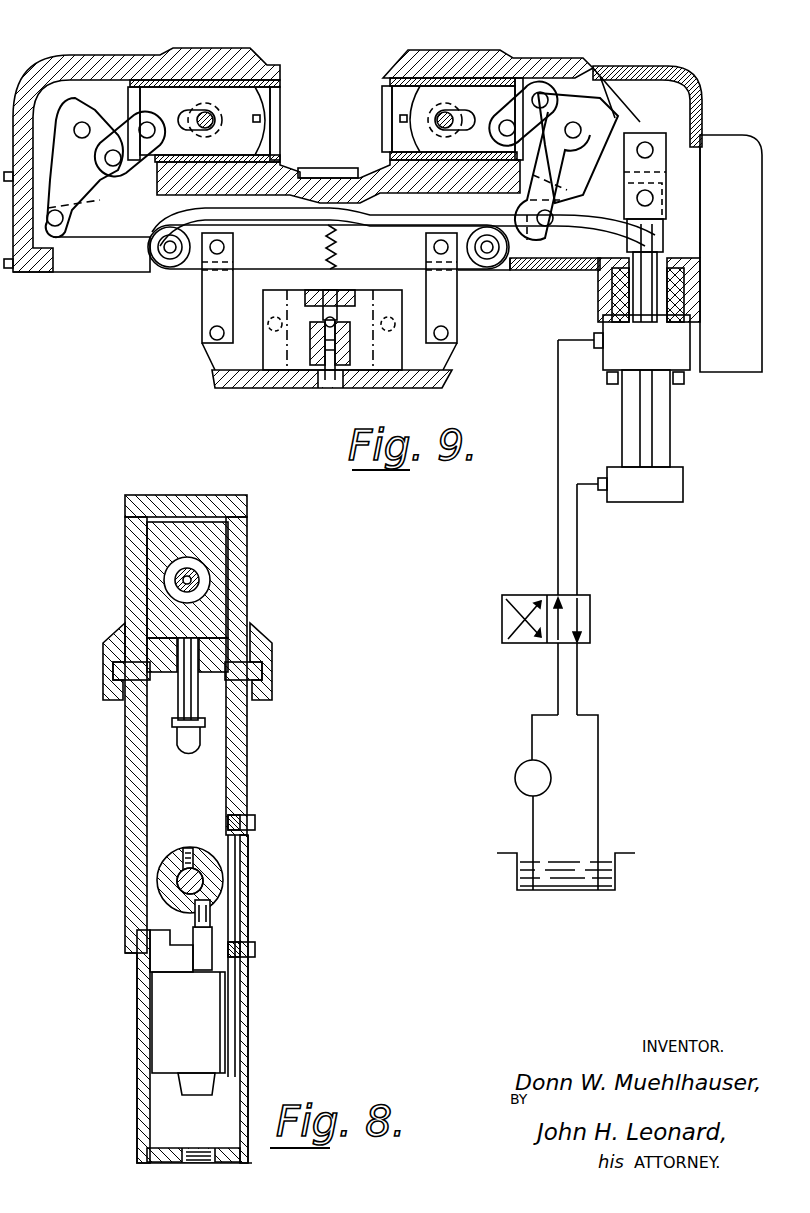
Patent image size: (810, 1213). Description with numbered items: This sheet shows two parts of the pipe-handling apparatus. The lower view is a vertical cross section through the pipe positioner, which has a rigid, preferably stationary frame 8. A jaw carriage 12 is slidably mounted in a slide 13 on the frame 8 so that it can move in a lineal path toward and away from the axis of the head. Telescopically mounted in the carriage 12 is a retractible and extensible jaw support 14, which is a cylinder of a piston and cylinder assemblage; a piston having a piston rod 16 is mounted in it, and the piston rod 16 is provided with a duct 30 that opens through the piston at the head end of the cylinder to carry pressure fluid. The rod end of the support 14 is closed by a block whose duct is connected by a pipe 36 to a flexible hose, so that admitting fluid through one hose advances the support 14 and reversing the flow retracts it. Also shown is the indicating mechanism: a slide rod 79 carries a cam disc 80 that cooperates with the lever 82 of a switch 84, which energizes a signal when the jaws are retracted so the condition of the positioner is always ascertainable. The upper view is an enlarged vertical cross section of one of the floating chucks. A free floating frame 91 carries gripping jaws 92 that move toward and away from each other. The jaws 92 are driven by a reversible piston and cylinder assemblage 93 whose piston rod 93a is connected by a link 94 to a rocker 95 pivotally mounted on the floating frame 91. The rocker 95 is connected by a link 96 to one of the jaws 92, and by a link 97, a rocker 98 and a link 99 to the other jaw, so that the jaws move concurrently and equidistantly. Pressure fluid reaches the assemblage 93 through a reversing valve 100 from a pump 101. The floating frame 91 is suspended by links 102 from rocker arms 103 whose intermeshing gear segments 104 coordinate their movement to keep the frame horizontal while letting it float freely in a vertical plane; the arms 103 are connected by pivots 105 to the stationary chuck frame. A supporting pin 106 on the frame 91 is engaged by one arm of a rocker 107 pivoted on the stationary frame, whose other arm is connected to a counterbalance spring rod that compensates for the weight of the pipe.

In FIG. 8, the rigid frame 8 is at (248, 780).
In FIG. 8, the jaw carriage 12 is at (240, 506).
In FIG. 8, the slide 13 is at (113, 668).
In FIG. 8, the jaw support 14 is at (212, 610).
In FIG. 8, the piston rod 16 is at (200, 570).
In FIG. 8, the duct 30 is at (200, 578).
In FIG. 8, the pipe 36 is at (200, 708).
In FIG. 8, the slide rod 79 is at (204, 881).
In FIG. 8, the cam disc 80 is at (217, 860).
In FIG. 8, the lever 82 is at (206, 910).
In FIG. 8, the switch 84 is at (225, 1013).
In FIG. 9, the floating frame 91 is at (420, 52).
In FIG. 9, the gripping jaws 92 is at (245, 98).
In FIG. 9, the reversible piston and cylinder assemblage 93 is at (672, 438).
In FIG. 9, the piston rod 93a is at (660, 265).
In FIG. 9, the link 94 is at (670, 175).
In FIG. 9, the rocker 95 is at (628, 110).
In FIG. 9, the link 96 is at (535, 85).
In FIG. 9, the link 97 is at (118, 250).
In FIG. 9, the rocker 98 is at (60, 78).
In FIG. 9, the link 99 is at (128, 125).
In FIG. 9, the reversing valve 100 is at (500, 623).
In FIG. 9, the pump 101 is at (514, 780).
In FIG. 9, the links 102 is at (210, 318).
In FIG. 9, the rocker arms 103 is at (248, 262).
In FIG. 9, the gear segments 104 is at (334, 246).
In FIG. 9, the pivots 105 is at (170, 255).
In FIG. 9, the supporting pin 106 is at (312, 300).
In FIG. 9, the rocker 107 is at (330, 365).